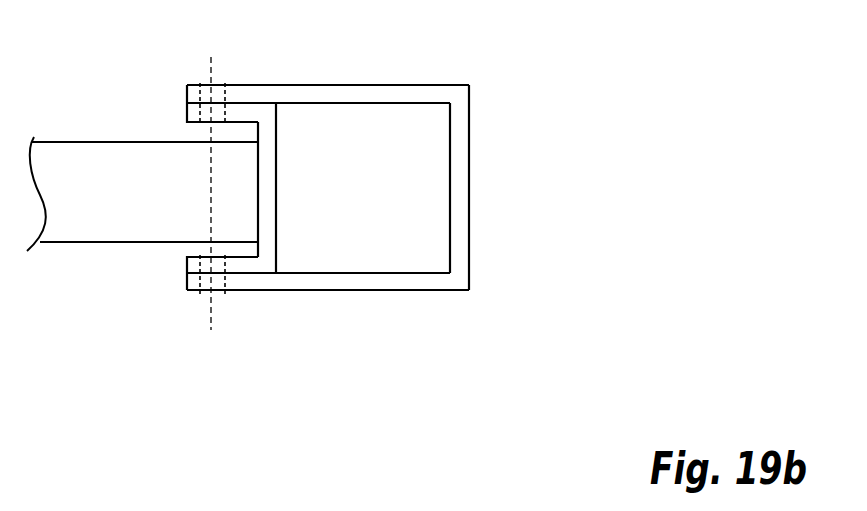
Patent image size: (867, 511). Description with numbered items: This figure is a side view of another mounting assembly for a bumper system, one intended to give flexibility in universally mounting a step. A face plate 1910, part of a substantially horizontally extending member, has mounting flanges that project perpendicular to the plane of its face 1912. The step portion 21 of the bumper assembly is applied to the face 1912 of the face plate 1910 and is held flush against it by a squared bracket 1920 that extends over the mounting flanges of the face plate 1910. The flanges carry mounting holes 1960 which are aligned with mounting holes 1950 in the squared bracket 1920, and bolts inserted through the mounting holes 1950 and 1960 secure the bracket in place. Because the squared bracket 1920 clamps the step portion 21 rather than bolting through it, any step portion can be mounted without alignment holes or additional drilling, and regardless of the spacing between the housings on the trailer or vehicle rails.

The face plate 1910 is at (186, 113).
The face 1912 is at (278, 148).
The squared bracket 1920 is at (470, 158).
The mounting holes 1950 is at (216, 85).
The mounting holes 1960 is at (200, 122).
The step portion 21 is at (421, 260).